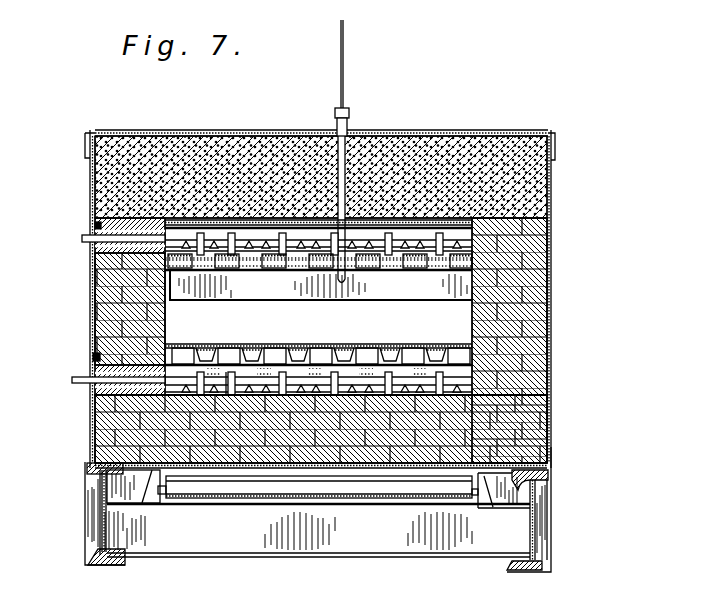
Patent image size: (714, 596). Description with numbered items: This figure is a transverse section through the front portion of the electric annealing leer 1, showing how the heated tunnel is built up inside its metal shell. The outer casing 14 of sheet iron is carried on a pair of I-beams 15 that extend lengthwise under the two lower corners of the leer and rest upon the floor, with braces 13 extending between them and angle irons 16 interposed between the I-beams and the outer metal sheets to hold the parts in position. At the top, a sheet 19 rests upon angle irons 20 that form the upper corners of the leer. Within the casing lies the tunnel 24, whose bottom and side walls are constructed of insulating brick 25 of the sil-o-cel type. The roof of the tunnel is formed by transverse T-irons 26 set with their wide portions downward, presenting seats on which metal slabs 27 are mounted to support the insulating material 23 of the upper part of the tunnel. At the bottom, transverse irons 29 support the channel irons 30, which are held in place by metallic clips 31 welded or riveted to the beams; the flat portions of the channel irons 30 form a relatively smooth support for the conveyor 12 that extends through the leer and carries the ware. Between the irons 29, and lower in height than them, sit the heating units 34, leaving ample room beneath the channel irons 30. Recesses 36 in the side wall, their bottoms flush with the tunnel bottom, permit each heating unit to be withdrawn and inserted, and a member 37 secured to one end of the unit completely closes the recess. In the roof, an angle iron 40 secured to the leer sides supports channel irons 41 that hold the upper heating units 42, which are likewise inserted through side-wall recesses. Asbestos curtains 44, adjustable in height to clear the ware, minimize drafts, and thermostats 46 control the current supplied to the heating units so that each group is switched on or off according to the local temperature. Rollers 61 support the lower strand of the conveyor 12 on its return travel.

The furnace 1 is at (469, 128).
The conveyor 12 is at (397, 490).
The braces 13 is at (188, 538).
The outer casing 14 is at (197, 318).
The I-beams 15 is at (104, 498).
The angle irons 16 is at (86, 462).
The sheet 19 is at (425, 134).
The angle irons 20 is at (90, 141).
The insulating material 23 is at (134, 153).
The tunnel 24 is at (130, 298).
The insulating brick 25 is at (153, 410).
The T-irons 26 is at (222, 228).
The metal slabs 27 is at (192, 222).
The irons 29 is at (190, 371).
The channel irons 30 is at (471, 363).
The metallic clips 31 is at (426, 350).
The heating units 34 is at (226, 392).
The recesses 36 is at (95, 229).
The member 37 is at (82, 246).
The angle iron 40 is at (198, 256).
The channel irons 41 is at (415, 257).
The heating units 42 is at (362, 240).
The curtains 44 is at (454, 287).
The thermostats 46 is at (335, 118).
The rollers 61 is at (534, 491).